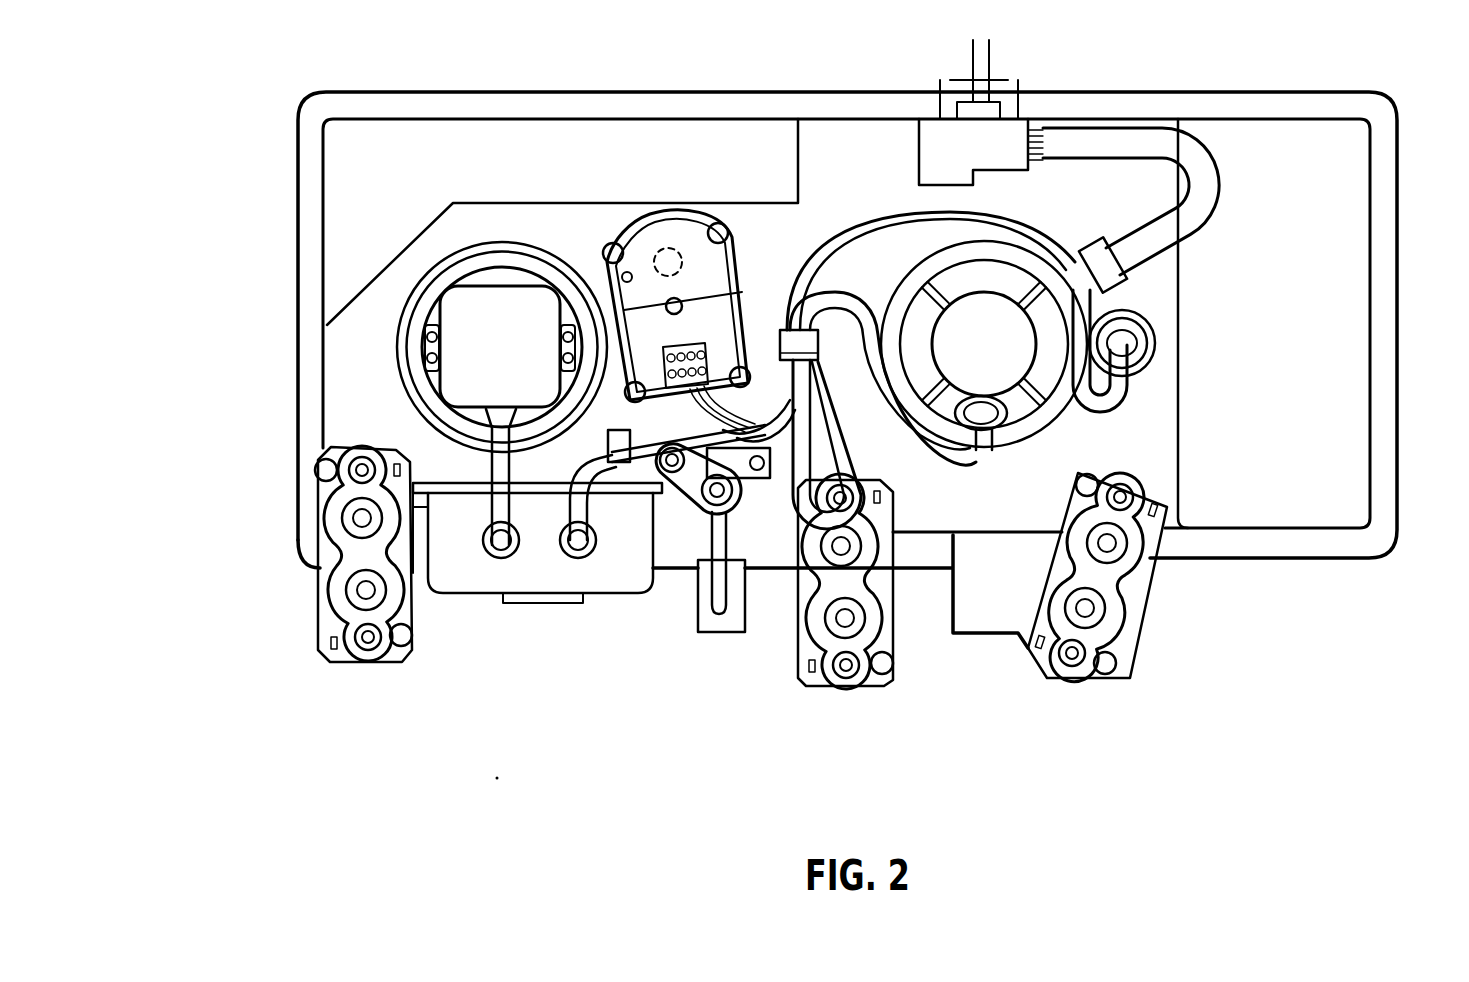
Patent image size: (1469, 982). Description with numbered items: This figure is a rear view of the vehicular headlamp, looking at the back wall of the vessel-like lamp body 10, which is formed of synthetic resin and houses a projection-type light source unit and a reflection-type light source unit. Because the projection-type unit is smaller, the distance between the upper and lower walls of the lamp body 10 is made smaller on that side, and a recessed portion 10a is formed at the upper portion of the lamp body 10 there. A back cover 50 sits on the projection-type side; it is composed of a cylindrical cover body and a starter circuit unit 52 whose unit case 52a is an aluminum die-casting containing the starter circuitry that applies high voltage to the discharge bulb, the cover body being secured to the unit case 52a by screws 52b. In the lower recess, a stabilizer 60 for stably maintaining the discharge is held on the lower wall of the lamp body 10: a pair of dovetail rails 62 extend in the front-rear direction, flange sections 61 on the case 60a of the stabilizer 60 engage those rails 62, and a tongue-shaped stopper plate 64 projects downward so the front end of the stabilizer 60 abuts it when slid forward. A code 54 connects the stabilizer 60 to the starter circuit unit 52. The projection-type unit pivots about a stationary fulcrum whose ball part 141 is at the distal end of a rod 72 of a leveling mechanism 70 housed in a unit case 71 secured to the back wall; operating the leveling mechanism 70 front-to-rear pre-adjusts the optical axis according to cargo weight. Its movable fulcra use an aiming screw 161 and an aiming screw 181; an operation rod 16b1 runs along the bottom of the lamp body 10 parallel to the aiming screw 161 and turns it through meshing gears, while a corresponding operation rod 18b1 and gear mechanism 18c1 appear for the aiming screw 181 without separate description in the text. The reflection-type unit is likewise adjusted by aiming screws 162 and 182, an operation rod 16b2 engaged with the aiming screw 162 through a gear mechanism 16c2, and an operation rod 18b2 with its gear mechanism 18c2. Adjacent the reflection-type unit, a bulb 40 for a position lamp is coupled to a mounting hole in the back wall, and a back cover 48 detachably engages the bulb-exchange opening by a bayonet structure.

The lamp body 10 is at (833, 197).
The recessed portion 10a is at (447, 188).
The back cover 50 is at (421, 331).
The starter circuit unit 52 is at (362, 373).
The unit case 52a is at (490, 371).
The screws 52b is at (577, 327).
The code 54 is at (503, 557).
The stopper plate 64 is at (577, 557).
The stabilizer 60 is at (549, 619).
The case 60a is at (605, 584).
The flange sections 61 is at (437, 520).
The rails 62 is at (448, 520).
The leveling mechanism 70 is at (689, 238).
The unit case 71 is at (658, 246).
The ball part 141 is at (709, 155).
The rod 72 is at (667, 243).
The back cover 48 is at (960, 277).
The bulb 40 is at (1146, 328).
The aiming screw 181 is at (318, 487).
The first gear housing 18c1 is at (328, 575).
The first output shaft 18b1 is at (368, 650).
The aiming screw 161 is at (690, 530).
The operation rod 16b1 is at (728, 622).
The aiming screw 182 is at (907, 592).
The second gear housing 18c2 is at (815, 618).
The operation rod 18b2 is at (847, 667).
The aiming screw 162 is at (1158, 562).
The gear mechanism 16c2 is at (1133, 582).
The operation rod 16b2 is at (1069, 660).